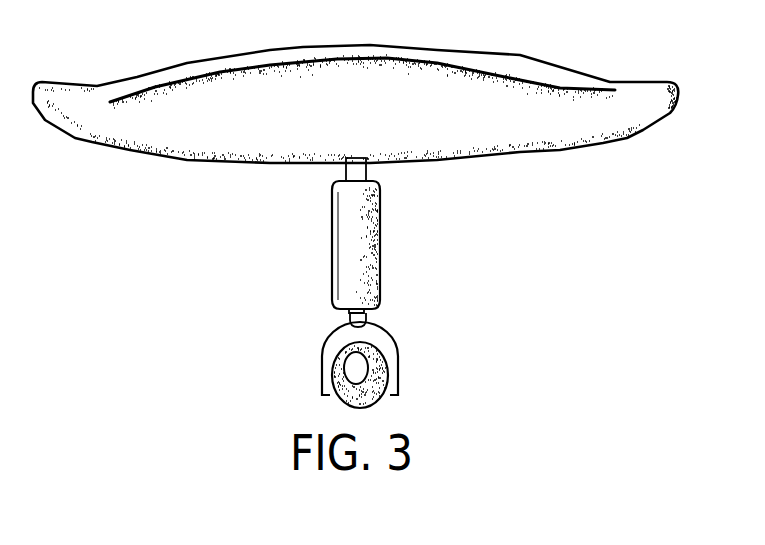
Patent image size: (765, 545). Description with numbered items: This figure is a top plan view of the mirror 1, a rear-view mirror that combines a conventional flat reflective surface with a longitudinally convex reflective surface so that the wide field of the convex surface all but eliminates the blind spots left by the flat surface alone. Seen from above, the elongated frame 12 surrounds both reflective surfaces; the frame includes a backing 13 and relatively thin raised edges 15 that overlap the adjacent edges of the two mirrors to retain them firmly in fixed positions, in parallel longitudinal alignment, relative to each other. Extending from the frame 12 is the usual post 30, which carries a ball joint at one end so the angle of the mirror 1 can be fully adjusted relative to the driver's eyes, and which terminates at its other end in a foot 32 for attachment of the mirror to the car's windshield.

The mirror 1 is at (112, 166).
The frame 12 is at (678, 88).
The backing 13 is at (532, 125).
The raised edges 15 is at (490, 62).
The post 30 is at (380, 255).
The foot 32 is at (382, 388).